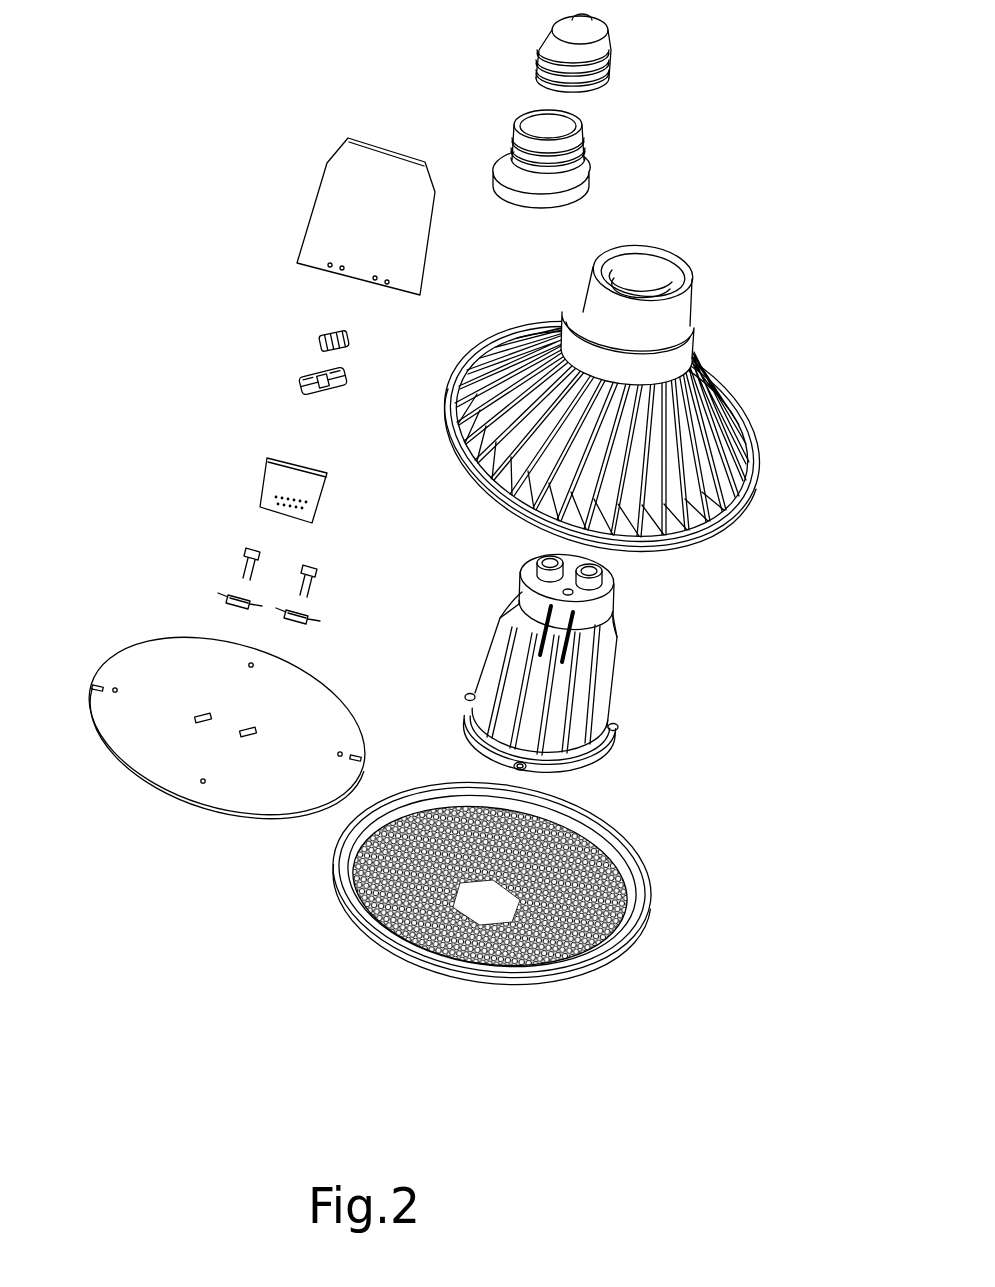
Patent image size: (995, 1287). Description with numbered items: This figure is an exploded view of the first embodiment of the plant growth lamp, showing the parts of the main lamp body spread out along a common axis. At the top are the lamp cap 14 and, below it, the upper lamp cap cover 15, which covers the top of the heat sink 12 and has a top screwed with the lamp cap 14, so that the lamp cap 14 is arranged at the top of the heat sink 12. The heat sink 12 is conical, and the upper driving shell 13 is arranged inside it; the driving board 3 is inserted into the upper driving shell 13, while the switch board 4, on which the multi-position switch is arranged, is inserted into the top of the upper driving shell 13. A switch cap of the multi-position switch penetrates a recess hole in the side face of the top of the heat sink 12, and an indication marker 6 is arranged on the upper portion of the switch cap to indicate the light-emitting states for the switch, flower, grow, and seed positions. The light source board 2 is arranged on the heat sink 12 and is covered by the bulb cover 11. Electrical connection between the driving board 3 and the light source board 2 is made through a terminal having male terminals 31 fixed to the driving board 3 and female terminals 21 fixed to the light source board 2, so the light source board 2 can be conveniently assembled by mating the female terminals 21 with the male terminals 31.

The light source board 2 is at (172, 652).
The female terminals 21 is at (302, 619).
The driving board 3 is at (353, 172).
The male terminals 31 is at (315, 568).
The switch board 4 is at (280, 474).
The indication marker 6 is at (347, 338).
The bulb cover 11 is at (602, 852).
The heat sink 12 is at (675, 357).
The upper driving shell 13 is at (603, 695).
The lamp cap 14 is at (582, 24).
The upper lamp cap cover 15 is at (512, 163).